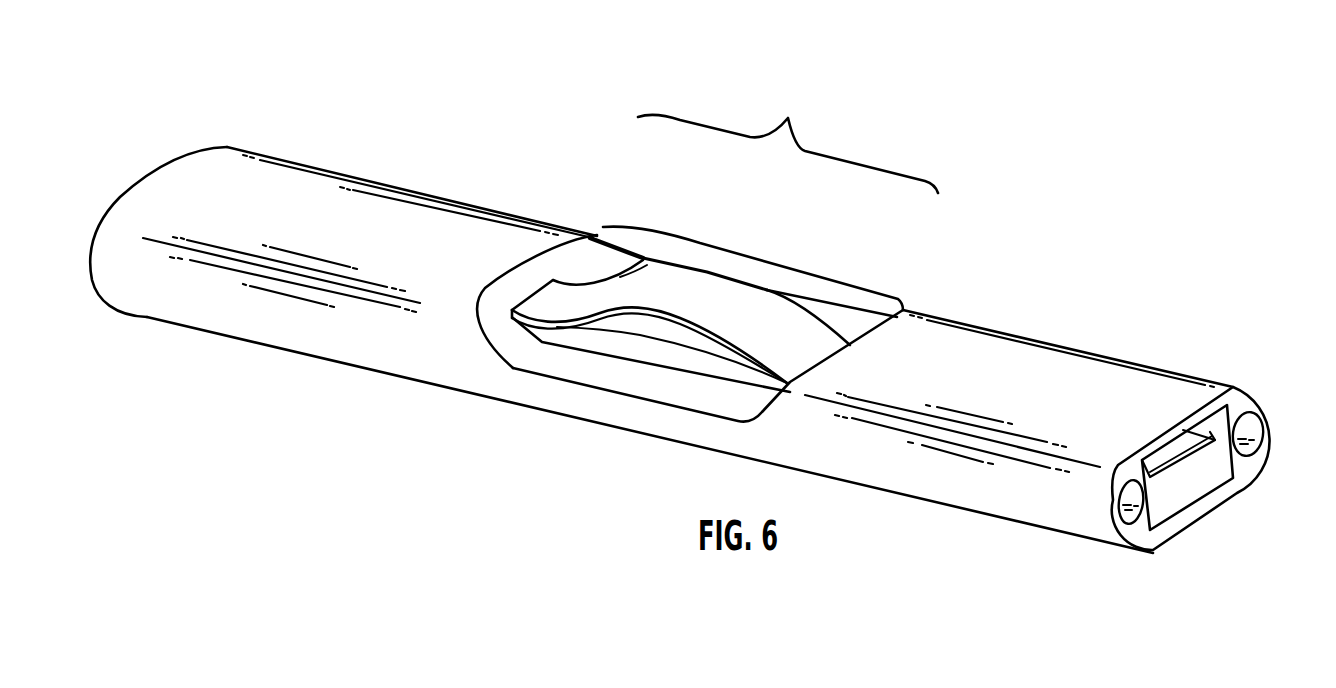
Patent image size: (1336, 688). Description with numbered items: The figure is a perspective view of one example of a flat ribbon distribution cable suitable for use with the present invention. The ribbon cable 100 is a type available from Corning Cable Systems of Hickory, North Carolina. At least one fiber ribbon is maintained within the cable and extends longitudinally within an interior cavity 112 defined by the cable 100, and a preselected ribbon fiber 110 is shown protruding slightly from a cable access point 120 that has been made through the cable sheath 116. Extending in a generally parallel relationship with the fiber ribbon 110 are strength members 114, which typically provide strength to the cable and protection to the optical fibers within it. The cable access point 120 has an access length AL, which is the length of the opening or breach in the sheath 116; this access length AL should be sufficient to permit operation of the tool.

The ribbon cable 100 is at (321, 208).
The ribbon fiber 110 is at (646, 283).
The interior cavity 112 is at (1178, 480).
The strength members 114 is at (1253, 423).
The cable sheath 116 is at (547, 360).
The cable access point 120 is at (740, 252).
The access length AL is at (788, 136).